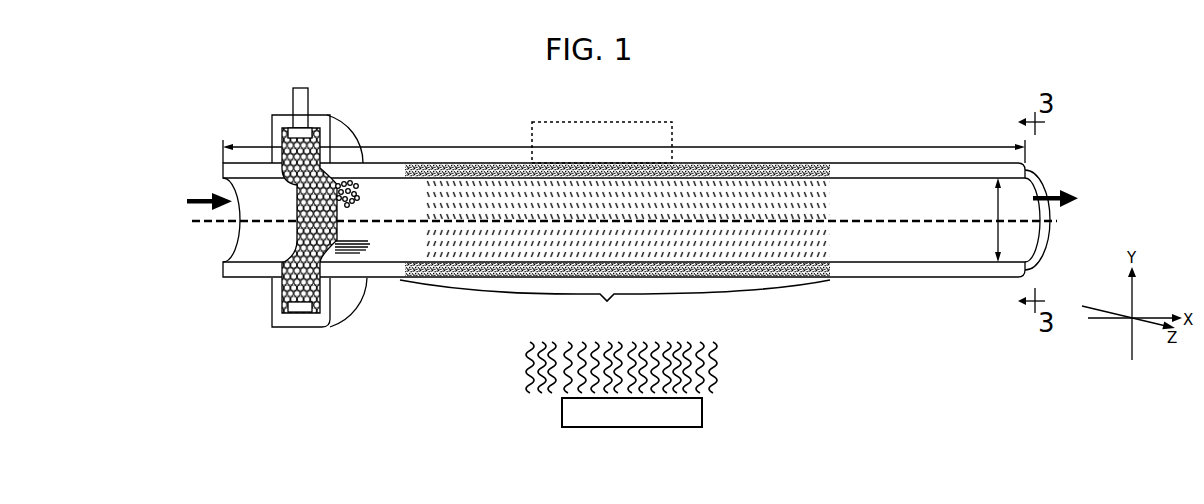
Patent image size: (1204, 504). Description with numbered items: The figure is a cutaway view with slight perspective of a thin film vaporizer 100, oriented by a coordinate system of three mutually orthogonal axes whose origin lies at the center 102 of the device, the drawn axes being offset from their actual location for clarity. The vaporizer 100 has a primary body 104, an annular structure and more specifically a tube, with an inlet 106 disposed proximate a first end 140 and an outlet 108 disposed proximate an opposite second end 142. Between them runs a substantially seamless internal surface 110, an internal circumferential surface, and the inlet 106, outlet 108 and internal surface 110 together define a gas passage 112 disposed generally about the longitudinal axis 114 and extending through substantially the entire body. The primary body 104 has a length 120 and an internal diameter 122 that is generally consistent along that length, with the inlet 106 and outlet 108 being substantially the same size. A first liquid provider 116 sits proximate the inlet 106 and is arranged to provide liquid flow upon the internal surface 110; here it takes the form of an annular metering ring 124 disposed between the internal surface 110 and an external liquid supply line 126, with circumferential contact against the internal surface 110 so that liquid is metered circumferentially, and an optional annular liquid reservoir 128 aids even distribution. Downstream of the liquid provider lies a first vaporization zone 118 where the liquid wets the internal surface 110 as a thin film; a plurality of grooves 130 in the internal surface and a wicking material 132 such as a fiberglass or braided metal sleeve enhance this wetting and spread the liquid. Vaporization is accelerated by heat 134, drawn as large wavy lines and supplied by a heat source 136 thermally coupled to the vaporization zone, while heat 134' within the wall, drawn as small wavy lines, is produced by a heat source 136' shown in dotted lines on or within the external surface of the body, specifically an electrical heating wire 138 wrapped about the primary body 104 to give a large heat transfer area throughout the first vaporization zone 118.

The thin film vaporizer 100 is at (940, 113).
The center 102 is at (667, 220).
The primary body 104 is at (882, 162).
The inlet 106 is at (222, 253).
The outlet 108 is at (1027, 251).
The internal surface 110 is at (902, 252).
The gas passage 112 is at (972, 203).
The longitudinal axis 114 is at (610, 223).
The first liquid provider 116 is at (302, 89).
The first vaporization zone 118 is at (615, 301).
The length 120 is at (624, 146).
The internal diameter 122 is at (984, 220).
The annular metering ring 124 is at (340, 297).
The external liquid supply line 126 is at (305, 112).
The annular liquid reservoir 128 is at (313, 129).
The grooves 130 is at (371, 248).
The wicking material 132 is at (357, 198).
The heat 134 is at (655, 367).
The heat within the primary body 134' is at (849, 139).
The heat source 136 is at (632, 412).
The heat source on the primary body 136' is at (602, 142).
The electrical heating wire 138 is at (447, 193).
The first end 140 is at (223, 163).
The second end 142 is at (1033, 168).